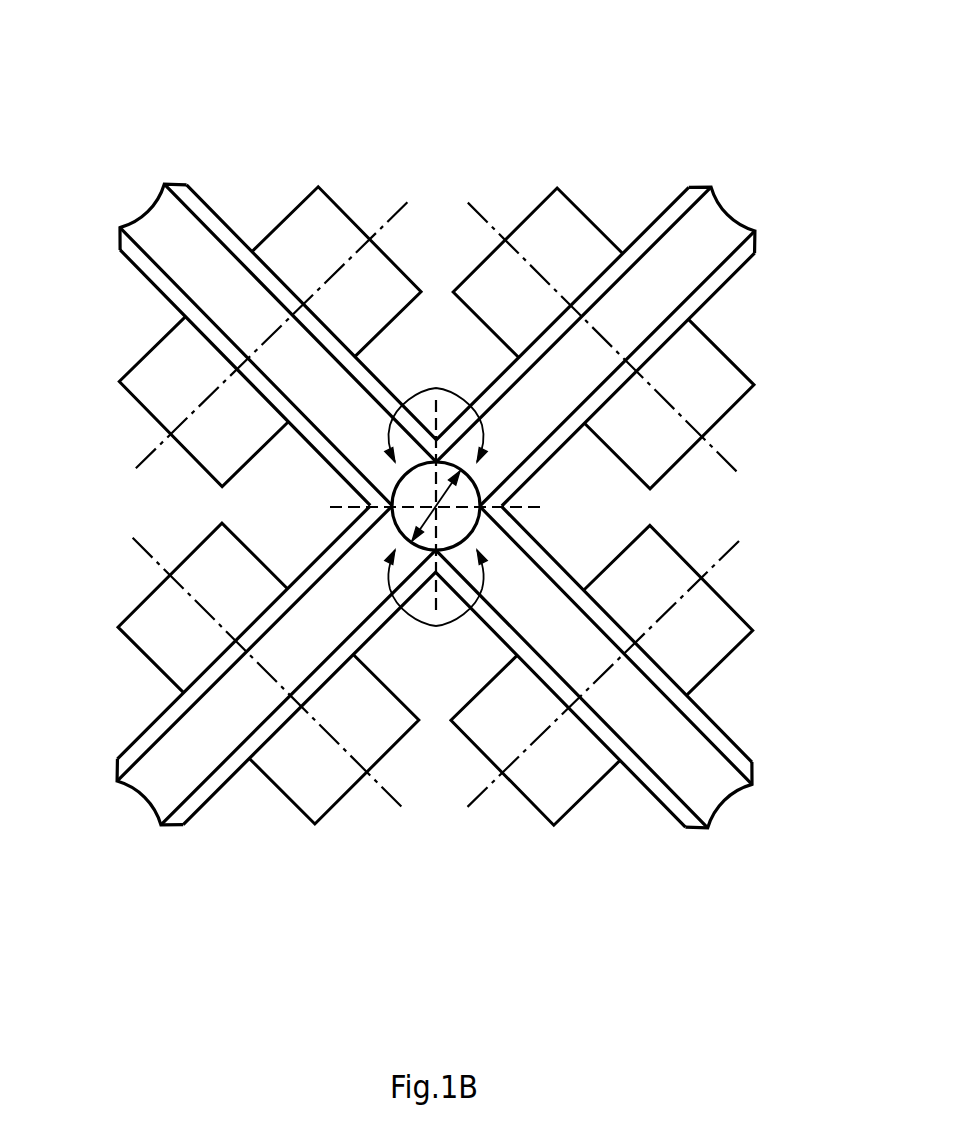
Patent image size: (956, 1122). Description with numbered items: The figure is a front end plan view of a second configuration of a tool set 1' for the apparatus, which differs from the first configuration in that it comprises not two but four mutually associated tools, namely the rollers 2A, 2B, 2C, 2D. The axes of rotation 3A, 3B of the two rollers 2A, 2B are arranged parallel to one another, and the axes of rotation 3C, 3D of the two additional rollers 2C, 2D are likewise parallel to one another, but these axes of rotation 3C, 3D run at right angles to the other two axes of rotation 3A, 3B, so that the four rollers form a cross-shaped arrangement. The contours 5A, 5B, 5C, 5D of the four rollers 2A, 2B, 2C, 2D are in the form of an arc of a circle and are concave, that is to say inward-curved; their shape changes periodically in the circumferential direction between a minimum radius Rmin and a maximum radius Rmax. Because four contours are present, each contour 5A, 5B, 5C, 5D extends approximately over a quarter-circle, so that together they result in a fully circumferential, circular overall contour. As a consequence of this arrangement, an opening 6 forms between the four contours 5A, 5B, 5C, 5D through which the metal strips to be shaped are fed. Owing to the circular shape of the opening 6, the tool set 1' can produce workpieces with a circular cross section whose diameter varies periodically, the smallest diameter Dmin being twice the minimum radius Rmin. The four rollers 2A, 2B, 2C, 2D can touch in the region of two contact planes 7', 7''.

The tool set 1' is at (436, 466).
The roller 2A is at (235, 182).
The roller 2B is at (637, 832).
The additional roller 2C is at (637, 182).
The additional roller 2D is at (235, 832).
The axis of rotation 3A is at (395, 213).
The axis of rotation 3B is at (477, 799).
The axis of rotation 3C is at (477, 213).
The axis of rotation 3D is at (395, 799).
The contour 5A is at (137, 220).
The contour 5B is at (740, 795).
The contour 5C is at (738, 224).
The contour 5D is at (134, 789).
The opening 6 is at (408, 517).
The contact plane 7' is at (323, 484).
The contact plane 7'' is at (386, 418).
The maximum radius Rmax is at (767, 843).
The minimum radius Rmin is at (436, 506).
The minimum diameter Dmin is at (466, 492).